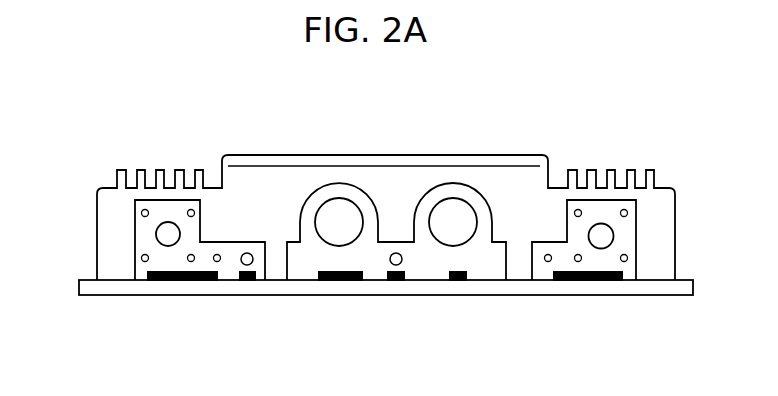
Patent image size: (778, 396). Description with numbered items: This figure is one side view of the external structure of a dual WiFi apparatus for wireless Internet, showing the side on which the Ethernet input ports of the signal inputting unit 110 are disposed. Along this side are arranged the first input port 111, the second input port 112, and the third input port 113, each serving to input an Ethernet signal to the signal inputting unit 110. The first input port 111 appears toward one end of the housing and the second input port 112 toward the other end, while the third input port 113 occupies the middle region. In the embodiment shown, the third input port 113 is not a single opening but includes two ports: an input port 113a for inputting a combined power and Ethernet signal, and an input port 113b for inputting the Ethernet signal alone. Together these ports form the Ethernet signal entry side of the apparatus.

The signal inputting unit 110 is at (205, 156).
The first input port 111 is at (598, 235).
The second input port 112 is at (168, 235).
The third input port 113 is at (396, 178).
The input port for inputting a power+Ethernet signal 113a is at (458, 180).
The input port for inputting the Ethernet signal 113b is at (334, 212).